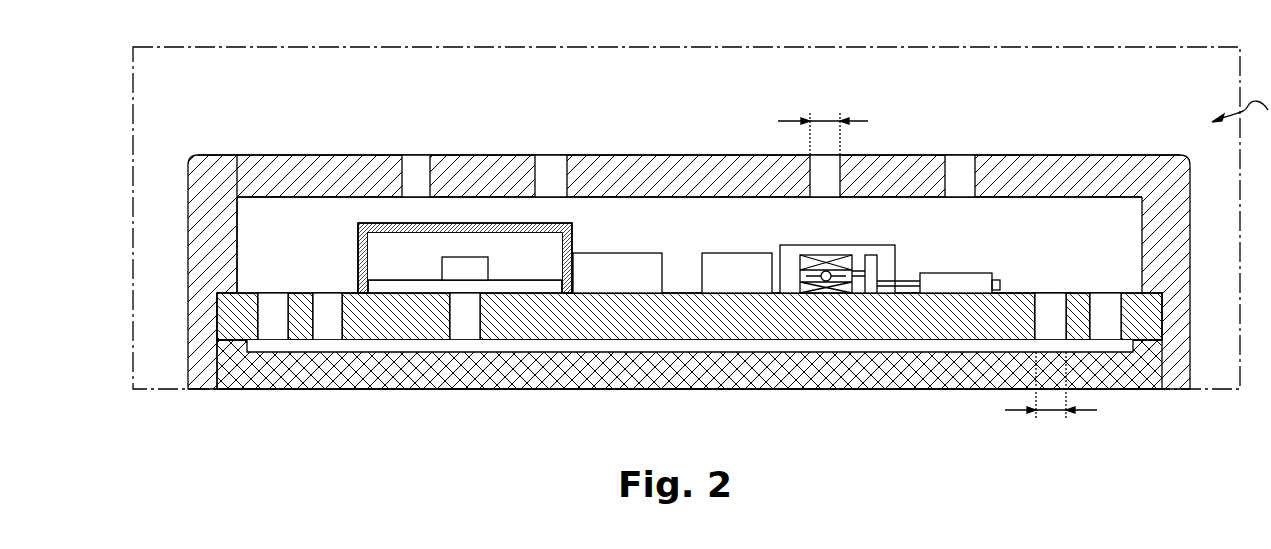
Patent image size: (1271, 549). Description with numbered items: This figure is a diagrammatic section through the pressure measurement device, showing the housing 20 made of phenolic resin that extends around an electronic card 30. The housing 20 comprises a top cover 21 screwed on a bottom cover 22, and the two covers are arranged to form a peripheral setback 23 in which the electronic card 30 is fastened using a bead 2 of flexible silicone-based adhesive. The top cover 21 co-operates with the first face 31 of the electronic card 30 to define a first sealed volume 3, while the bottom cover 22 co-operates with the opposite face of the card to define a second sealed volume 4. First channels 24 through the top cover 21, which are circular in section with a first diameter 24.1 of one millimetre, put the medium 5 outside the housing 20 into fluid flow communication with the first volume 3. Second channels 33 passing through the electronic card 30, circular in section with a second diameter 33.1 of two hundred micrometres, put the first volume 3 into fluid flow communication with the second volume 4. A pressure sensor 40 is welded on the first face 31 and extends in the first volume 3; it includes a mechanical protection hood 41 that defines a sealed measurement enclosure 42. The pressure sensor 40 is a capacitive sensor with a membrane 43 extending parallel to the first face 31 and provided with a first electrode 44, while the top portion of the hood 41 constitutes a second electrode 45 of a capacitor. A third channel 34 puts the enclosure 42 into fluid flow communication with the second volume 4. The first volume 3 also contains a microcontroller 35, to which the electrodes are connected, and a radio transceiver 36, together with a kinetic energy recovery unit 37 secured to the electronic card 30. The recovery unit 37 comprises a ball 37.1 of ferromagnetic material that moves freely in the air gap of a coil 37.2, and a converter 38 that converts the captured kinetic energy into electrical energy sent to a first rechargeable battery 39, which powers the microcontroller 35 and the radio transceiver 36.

The bead 2 is at (225, 310).
The first sealed volume 3 is at (277, 213).
The second sealed volume 4 is at (273, 346).
The medium 5 is at (700, 218).
The housing 20 is at (1078, 150).
The top cover 21 is at (893, 160).
The bottom cover 22 is at (952, 386).
The peripheral setback 23 is at (225, 285).
The first channels 24 is at (822, 183).
The first diameter 24.1 is at (826, 113).
The electronic card 30 is at (878, 310).
The first face 31 is at (1025, 292).
The second channels 33 is at (265, 325).
The second diameter 33.1 is at (1051, 406).
The third channel 34 is at (466, 333).
The microcontroller 35 is at (705, 253).
The radio transceiver 36 is at (622, 265).
The kinetic energy recovery unit 37 is at (824, 245).
The ball 37.1 is at (800, 277).
The coil 37.2 is at (800, 262).
The converter 38 is at (871, 255).
The first rechargeable battery 39 is at (957, 283).
The pressure sensor 40 is at (518, 250).
The mechanical protection hood 41 is at (358, 253).
The sealed measurement enclosure 42 is at (397, 267).
The membrane 43 is at (572, 290).
The first electrode 44 is at (473, 267).
The second electrode 45 is at (545, 227).